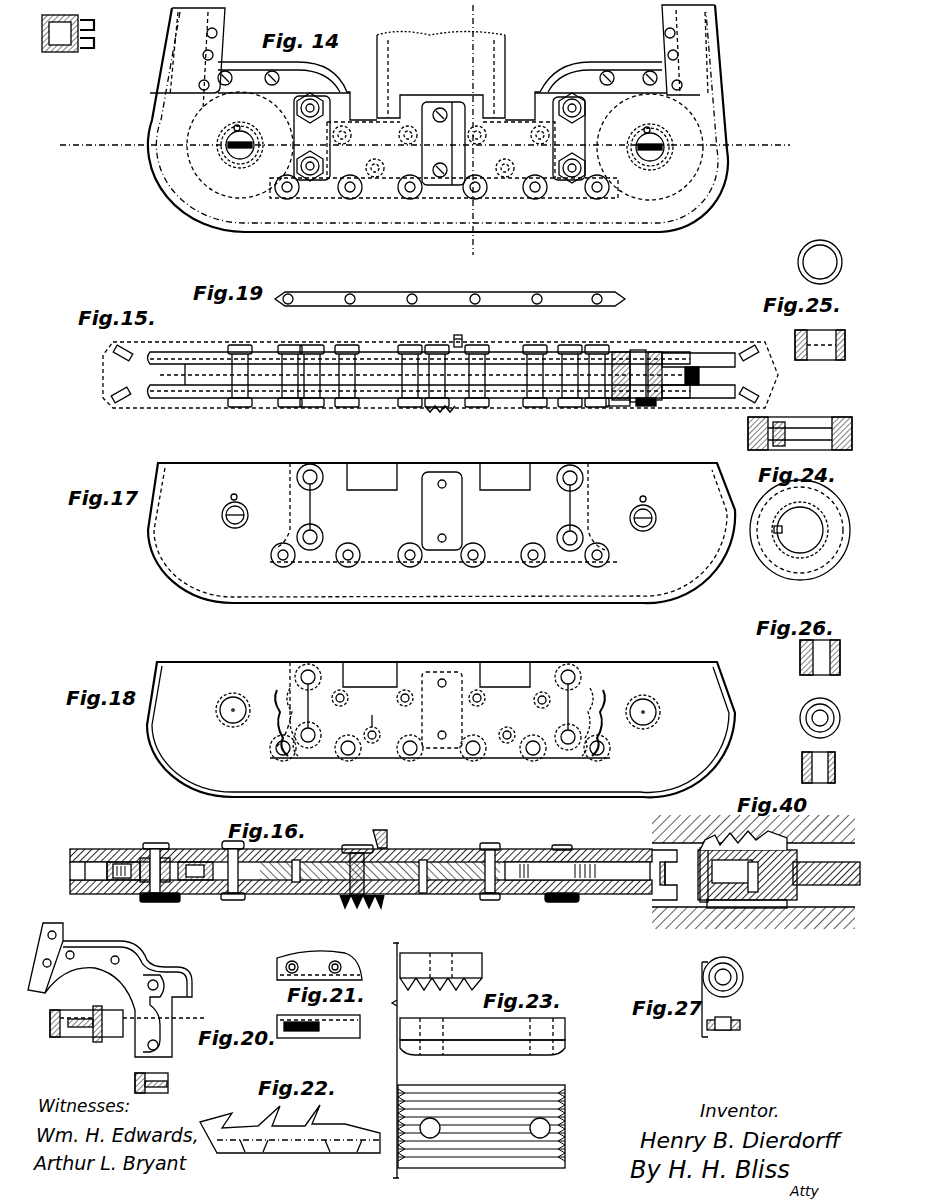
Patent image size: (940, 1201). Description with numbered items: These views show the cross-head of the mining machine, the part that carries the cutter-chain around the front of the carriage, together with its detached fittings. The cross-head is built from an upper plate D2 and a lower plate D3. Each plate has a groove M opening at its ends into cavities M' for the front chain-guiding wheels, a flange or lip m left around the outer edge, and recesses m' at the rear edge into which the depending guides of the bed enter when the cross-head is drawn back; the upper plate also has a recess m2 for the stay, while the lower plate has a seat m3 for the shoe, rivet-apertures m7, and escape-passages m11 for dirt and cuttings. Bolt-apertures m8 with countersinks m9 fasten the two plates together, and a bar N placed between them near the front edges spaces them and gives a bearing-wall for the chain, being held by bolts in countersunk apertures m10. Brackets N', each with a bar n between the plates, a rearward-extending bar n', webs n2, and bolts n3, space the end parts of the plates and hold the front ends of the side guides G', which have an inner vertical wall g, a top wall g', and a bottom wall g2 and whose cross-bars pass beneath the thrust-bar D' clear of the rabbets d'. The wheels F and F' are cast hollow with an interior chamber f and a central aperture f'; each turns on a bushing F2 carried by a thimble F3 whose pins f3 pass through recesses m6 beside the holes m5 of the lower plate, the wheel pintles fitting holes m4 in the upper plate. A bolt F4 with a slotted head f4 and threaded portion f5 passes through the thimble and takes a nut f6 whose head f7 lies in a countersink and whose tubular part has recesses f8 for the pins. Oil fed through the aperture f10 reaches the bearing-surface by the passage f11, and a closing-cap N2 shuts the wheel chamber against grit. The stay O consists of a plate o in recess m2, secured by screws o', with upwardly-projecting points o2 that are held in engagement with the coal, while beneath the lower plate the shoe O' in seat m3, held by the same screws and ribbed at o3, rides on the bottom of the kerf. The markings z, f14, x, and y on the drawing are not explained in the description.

In FIG. 14, the inner vertical wall g is at (76, 33).
In FIG. 14, the top wall g' is at (396, 48).
In FIG. 14, the bottom wall g2 is at (62, 52).
In FIG. 14, the holes z is at (205, 33).
In FIG. 14, the side guide G' is at (432, 57).
In FIG. 14, the rearward-extending bar n' is at (167, 86).
In FIG. 20, the rearward-extending bar n' is at (60, 954).
In FIG. 14, the bracket or bracing-piece N' is at (442, 84).
In FIG. 20, the bracket or bracing-piece N' is at (130, 999).
In FIG. 14, the recess m' is at (444, 83).
In FIG. 17, the recess m' is at (438, 476).
In FIG. 18, the recess m' is at (436, 674).
In FIG. 14, the thrust-bar D' is at (439, 120).
In FIG. 16, the thrust-bar D' is at (361, 860).
In FIG. 40, the thrust-bar D' is at (826, 865).
In FIG. 14, the rabbet d' is at (456, 75).
In FIG. 14, the bolt or screw o' is at (446, 142).
In FIG. 14, the chain-guiding wheel F is at (240, 145).
In FIG. 24, the chain-guiding wheel F is at (800, 488).
In FIG. 16, the chain-guiding wheel F is at (123, 850).
In FIG. 14, the chain-guiding wheel F' is at (650, 147).
In FIG. 16, the chain-guiding wheel F' is at (565, 860).
In FIG. 14, the pin f14 is at (237, 125).
In FIG. 14, the bolt or pin F4 is at (240, 157).
In FIG. 15, the bolt or pin F4 is at (662, 357).
In FIG. 16, the bolt or pin F4 is at (160, 856).
In FIG. 14, the bar n is at (441, 138).
In FIG. 20, the bar n is at (134, 1038).
In FIG. 14, the cavity M' is at (456, 130).
In FIG. 17, the cavity M' is at (442, 539).
In FIG. 18, the cavity M' is at (441, 729).
In FIG. 14, the groove M is at (426, 191).
In FIG. 17, the groove M is at (445, 545).
In FIG. 18, the groove M is at (440, 738).
In FIG. 40, the groove M is at (730, 849).
In FIG. 14, the spacing bar N is at (444, 215).
In FIG. 19, the spacing bar N is at (450, 286).
In FIG. 15, the spacing bar N is at (419, 391).
In FIG. 14, the stay device O is at (443, 143).
In FIG. 15, the stay device O is at (418, 367).
In FIG. 16, the stay device O is at (351, 872).
In FIG. 40, the stay device O is at (743, 856).
In FIG. 22, the stay device O is at (290, 1115).
In FIG. 14, the flange or lip m is at (528, 241).
In FIG. 15, the flange or lip m is at (440, 363).
In FIG. 17, the flange or lip m is at (298, 605).
In FIG. 18, the flange or lip m is at (524, 802).
In FIG. 40, the flange or lip m is at (652, 858).
In FIG. 14, the upper plate D2 is at (683, 207).
In FIG. 15, the upper plate D2 is at (677, 358).
In FIG. 17, the upper plate D2 is at (507, 520).
In FIG. 16, the upper plate D2 is at (440, 850).
In FIG. 40, the upper plate D2 is at (705, 848).
In FIG. 14, the oiling-aperture f10 is at (647, 127).
In FIG. 17, the oiling-aperture f10 is at (234, 494).
In FIG. 14, the axis x is at (791, 162).
In FIG. 14, the axis y is at (486, 14).
In FIG. 15, the nut head f7 is at (237, 405).
In FIG. 26, the nut head f7 is at (838, 652).
In FIG. 16, the nut head f7 is at (568, 902).
In FIG. 27, the nut head f7 is at (738, 1030).
In FIG. 15, the thimble F3 is at (623, 353).
In FIG. 26, the thimble F3 is at (835, 718).
In FIG. 15, the slotted head f4 is at (640, 363).
In FIG. 16, the slotted head f4 is at (150, 845).
In FIG. 15, the nut f6 is at (626, 403).
In FIG. 16, the nut f6 is at (172, 900).
In FIG. 27, the nut f6 is at (740, 995).
In FIG. 15, the screw-threaded portion f5 is at (647, 403).
In FIG. 16, the screw-threaded portion f5 is at (157, 903).
In FIG. 15, the lower plate D3 is at (698, 398).
In FIG. 18, the lower plate D3 is at (469, 710).
In FIG. 16, the lower plate D3 is at (445, 895).
In FIG. 40, the lower plate D3 is at (677, 905).
In FIG. 25, the bushing F2 is at (820, 290).
In FIG. 24, the central aperture f' is at (787, 463).
In FIG. 24, the interior chamber f is at (841, 445).
In FIG. 24, the recess f8 is at (777, 530).
In FIG. 27, the recess f8 is at (745, 977).
In FIG. 17, the recess m2 is at (422, 518).
In FIG. 16, the recess m2 is at (385, 845).
In FIG. 17, the countersunk aperture m10 is at (533, 557).
In FIG. 18, the countersunk aperture m10 is at (533, 752).
In FIG. 17, the bolt-aperture m8 is at (440, 497).
In FIG. 18, the bolt-aperture m8 is at (438, 717).
In FIG. 17, the countersink m9 is at (322, 537).
In FIG. 18, the countersink m9 is at (313, 672).
In FIG. 16, the countersink m9 is at (228, 844).
In FIG. 17, the hole m4 is at (222, 516).
In FIG. 18, the seat or cavity m3 is at (456, 683).
In FIG. 16, the seat or cavity m3 is at (422, 896).
In FIG. 18, the rivet-aperture m7 is at (397, 698).
In FIG. 18, the hole m5 is at (235, 705).
In FIG. 18, the recess m6 is at (220, 712).
In FIG. 18, the escape-passage m11 is at (595, 705).
In FIG. 26, the pin f3 is at (806, 678).
In FIG. 26, the oil passage f11 is at (820, 705).
In FIG. 16, the web n2 is at (167, 892).
In FIG. 20, the web n2 is at (100, 955).
In FIG. 16, the bolt n3 is at (248, 898).
In FIG. 40, the shoe O' is at (753, 921).
In FIG. 23, the shoe O' is at (501, 1050).
In FIG. 21, the closing-cap N2 is at (319, 993).
In FIG. 22, the upwardly-projecting point o2 is at (267, 1116).
In FIG. 22, the plate o is at (302, 1163).
In FIG. 23, the longitudinal rib o3 is at (482, 982).